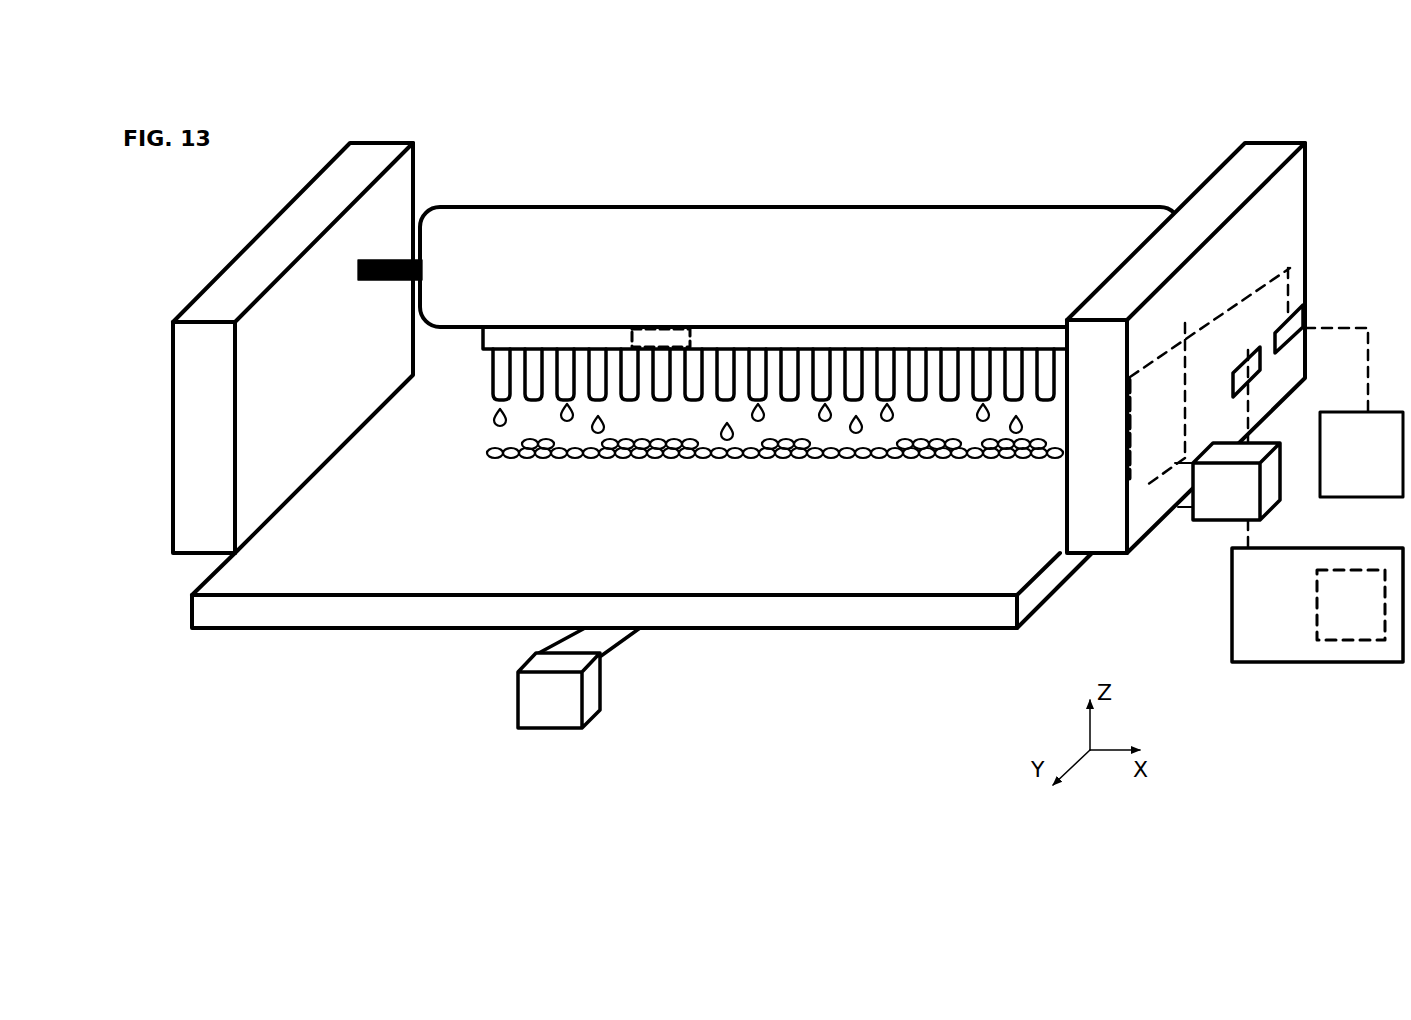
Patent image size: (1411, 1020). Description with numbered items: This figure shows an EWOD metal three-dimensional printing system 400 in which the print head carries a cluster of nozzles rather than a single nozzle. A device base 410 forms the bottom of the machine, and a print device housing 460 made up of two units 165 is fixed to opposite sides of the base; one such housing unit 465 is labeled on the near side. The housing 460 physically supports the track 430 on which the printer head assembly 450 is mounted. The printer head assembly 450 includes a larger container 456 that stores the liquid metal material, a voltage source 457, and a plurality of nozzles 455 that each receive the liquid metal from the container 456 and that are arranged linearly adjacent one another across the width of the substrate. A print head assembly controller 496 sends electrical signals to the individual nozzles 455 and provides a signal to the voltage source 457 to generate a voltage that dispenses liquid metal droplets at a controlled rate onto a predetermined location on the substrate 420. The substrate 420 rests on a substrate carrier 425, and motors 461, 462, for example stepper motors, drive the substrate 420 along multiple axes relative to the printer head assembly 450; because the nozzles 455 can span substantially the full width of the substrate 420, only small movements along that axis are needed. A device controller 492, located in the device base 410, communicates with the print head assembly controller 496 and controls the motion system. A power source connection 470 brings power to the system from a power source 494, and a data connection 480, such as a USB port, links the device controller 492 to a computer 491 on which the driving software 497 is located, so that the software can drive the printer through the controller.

The printing system 400 is at (215, 250).
The device base 410 is at (607, 616).
The substrate 420 is at (240, 577).
The substrate carrier 425 is at (530, 615).
The track 430 is at (392, 256).
The printer head assembly 450 is at (795, 306).
The nozzles 455 is at (490, 368).
The container 456 is at (740, 207).
The voltage source 457 is at (955, 338).
The print device housing 460 is at (238, 348).
The housing unit 465 is at (197, 427).
The motor 461 is at (590, 705).
The motor 462 is at (1213, 485).
The unit 165 is at (1270, 210).
The power source connection 470 is at (1305, 313).
The data connection 480 is at (1255, 372).
The computer 491 is at (1230, 619).
The device controller 492 is at (1160, 483).
The power source 494 is at (1361, 454).
The print head assembly controller 496 is at (610, 338).
The driving software 497 is at (1351, 605).